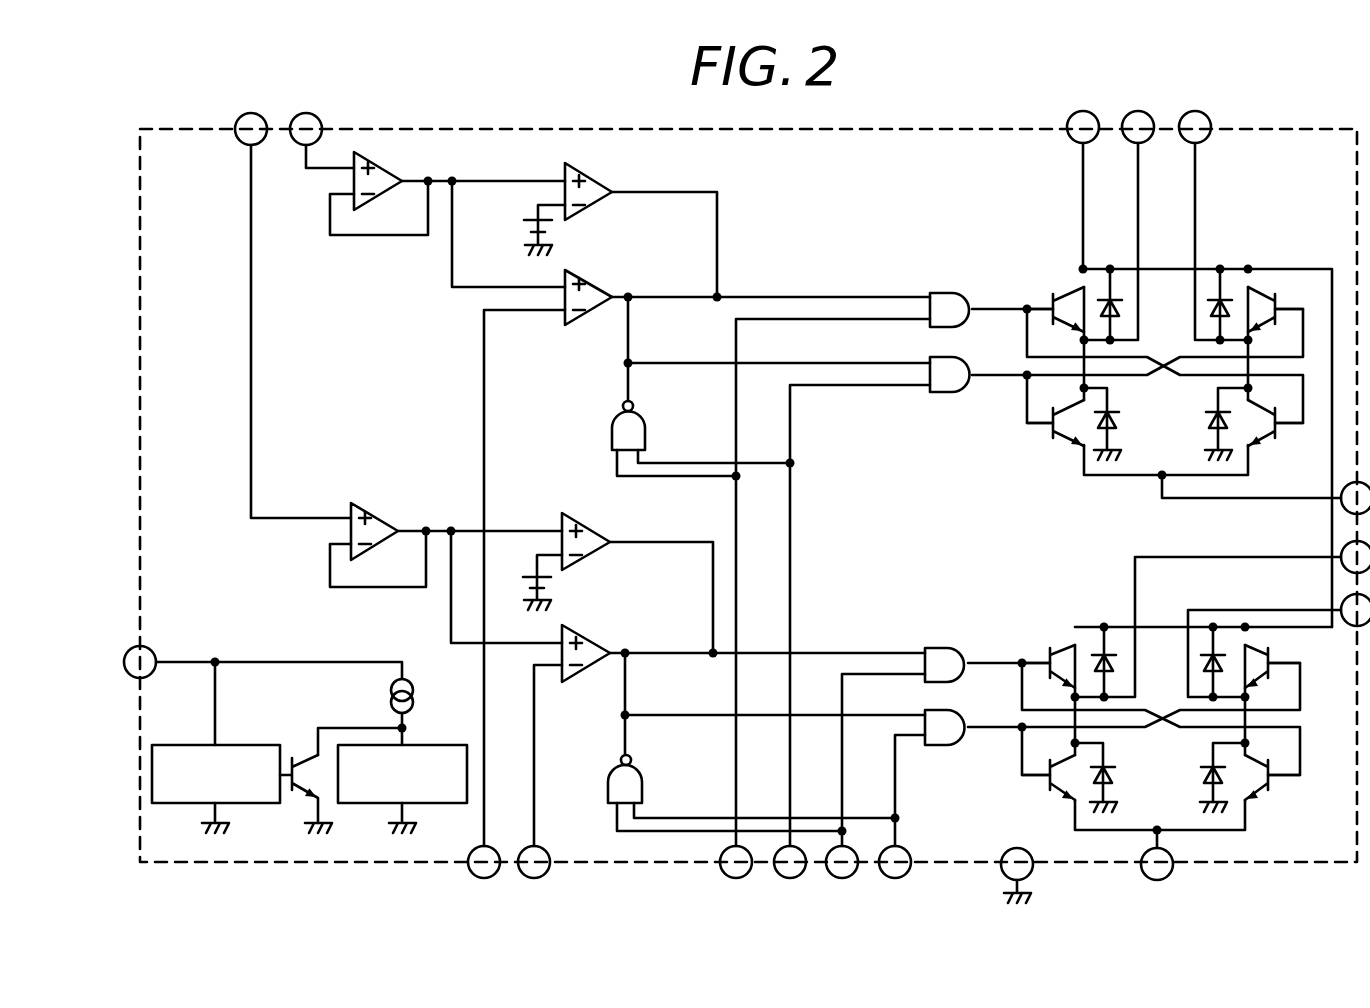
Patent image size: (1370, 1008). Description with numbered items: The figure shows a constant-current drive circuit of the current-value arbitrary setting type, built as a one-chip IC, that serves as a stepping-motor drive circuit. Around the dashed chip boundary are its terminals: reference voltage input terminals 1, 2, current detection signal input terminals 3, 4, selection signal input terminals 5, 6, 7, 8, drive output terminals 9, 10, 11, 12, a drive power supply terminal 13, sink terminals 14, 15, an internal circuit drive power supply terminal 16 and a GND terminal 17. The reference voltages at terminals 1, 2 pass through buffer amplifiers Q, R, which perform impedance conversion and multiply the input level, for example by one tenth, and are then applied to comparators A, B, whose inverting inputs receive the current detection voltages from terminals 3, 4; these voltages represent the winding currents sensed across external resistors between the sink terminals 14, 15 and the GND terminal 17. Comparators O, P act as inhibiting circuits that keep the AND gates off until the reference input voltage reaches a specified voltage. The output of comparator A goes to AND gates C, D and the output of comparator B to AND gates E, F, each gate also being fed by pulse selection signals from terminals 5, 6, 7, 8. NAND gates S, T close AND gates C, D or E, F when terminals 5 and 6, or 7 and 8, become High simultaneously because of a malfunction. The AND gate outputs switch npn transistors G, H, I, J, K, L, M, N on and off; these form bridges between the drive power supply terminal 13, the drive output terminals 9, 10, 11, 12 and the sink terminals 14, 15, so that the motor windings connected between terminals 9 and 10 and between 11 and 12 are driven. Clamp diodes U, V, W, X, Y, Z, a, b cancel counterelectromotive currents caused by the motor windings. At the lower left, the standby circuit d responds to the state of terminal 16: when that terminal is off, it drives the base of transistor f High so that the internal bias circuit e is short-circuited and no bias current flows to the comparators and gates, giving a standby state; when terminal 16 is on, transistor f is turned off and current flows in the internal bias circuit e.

The buffer amplifier Q is at (386, 167).
The comparator O is at (598, 174).
The comparator A is at (592, 318).
The buffer amplifier R is at (380, 517).
The comparator P is at (594, 528).
The comparator B is at (598, 673).
The NAND gate S is at (612, 430).
The NAND gate T is at (608, 790).
The AND gate C is at (949, 291).
The AND gate D is at (949, 394).
The AND gate E is at (943, 646).
The AND gate F is at (949, 747).
The npn transistor G is at (1072, 290).
The npn transistor H is at (1063, 447).
The npn transistor I is at (1286, 310).
The npn transistor J is at (1270, 447).
The npn transistor K is at (1043, 650).
The npn transistor L is at (1062, 797).
The npn transistor M is at (1272, 655).
The npn transistor N is at (1258, 797).
The clamp diode U is at (1122, 312).
The clamp diode V is at (1120, 421).
The clamp diode W is at (1210, 315).
The clamp diode X is at (1208, 422).
The clamp diode Y is at (1116, 662).
The clamp diode Z is at (1112, 771).
The clamp diode a is at (1205, 665).
The clamp diode b is at (1205, 771).
The standby circuit d is at (263, 745).
The internal bias circuit e is at (457, 745).
The transistor f is at (313, 805).
The reference voltage input terminal 1 is at (306, 129).
The reference voltage input terminal 2 is at (251, 129).
The current detection signal input terminal 3 is at (484, 862).
The current detection signal input terminal 4 is at (534, 862).
The selection signal input terminal 5 is at (736, 862).
The selection signal input terminal 6 is at (790, 862).
The selection signal input terminal 7 is at (842, 862).
The selection signal input terminal 8 is at (895, 862).
The drive output terminal 9 is at (1138, 127).
The drive output terminal 10 is at (1195, 127).
The drive output terminal 11 is at (1355, 557).
The drive output terminal 12 is at (1355, 610).
The drive power supply terminal 13 is at (1083, 127).
The sink terminal 14 is at (1355, 498).
The sink terminal 15 is at (1157, 864).
The internal circuit drive power supply terminal 16 is at (140, 662).
The GND terminal 17 is at (1017, 875).